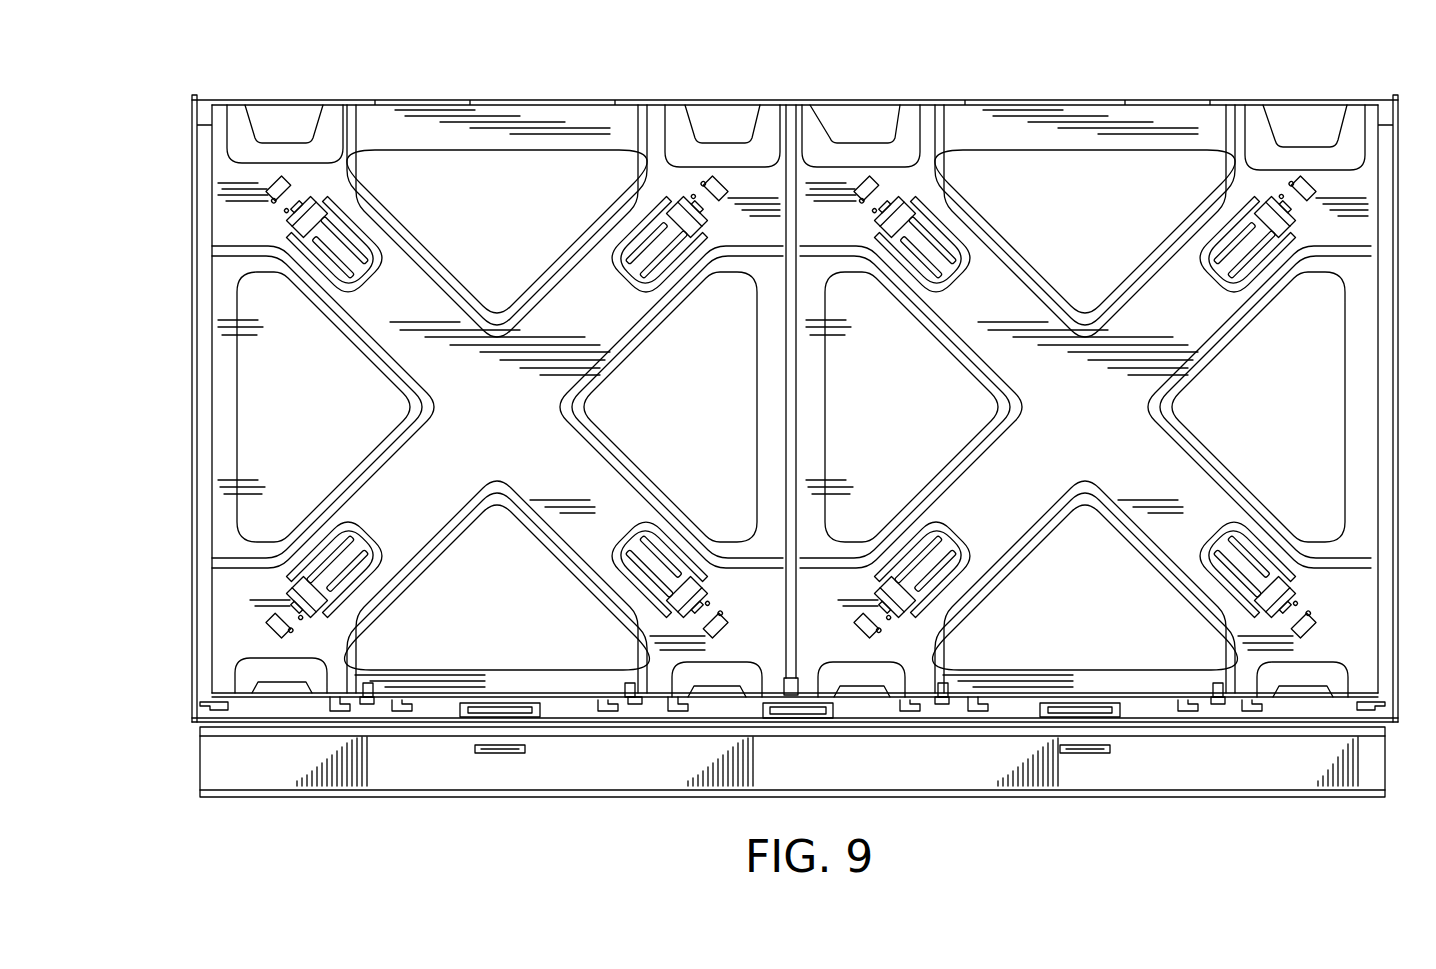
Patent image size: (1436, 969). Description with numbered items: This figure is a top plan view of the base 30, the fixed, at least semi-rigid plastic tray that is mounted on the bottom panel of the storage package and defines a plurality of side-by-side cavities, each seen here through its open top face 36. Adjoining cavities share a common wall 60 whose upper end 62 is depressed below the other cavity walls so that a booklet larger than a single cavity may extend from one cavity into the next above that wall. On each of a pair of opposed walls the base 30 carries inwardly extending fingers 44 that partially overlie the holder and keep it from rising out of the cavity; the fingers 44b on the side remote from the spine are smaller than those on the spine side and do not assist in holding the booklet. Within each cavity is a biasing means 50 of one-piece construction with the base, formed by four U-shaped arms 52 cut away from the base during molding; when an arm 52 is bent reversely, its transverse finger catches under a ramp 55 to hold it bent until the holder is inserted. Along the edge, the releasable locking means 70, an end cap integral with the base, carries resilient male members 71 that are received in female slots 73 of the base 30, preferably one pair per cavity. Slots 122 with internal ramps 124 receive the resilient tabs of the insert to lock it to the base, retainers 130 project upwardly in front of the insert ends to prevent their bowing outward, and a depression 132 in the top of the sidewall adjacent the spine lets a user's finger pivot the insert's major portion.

The base 30 is at (190, 298).
The open top face 36 is at (395, 730).
The fingers 44 is at (272, 118).
The fingers on the side remote from the spine 44b is at (1218, 683).
The biasing means 50 is at (380, 497).
The arms 52 is at (382, 290).
The ramp 55 is at (862, 192).
The common wall 60 is at (788, 680).
The upper end of the common wall 62 is at (795, 688).
The releasable locking means 70 is at (1175, 797).
The resilient male member 71 is at (495, 753).
The female slot 73 is at (497, 703).
The slot 122 is at (335, 711).
The ramp 124 is at (367, 705).
The retainers 130 is at (222, 711).
The depression 132 is at (470, 100).